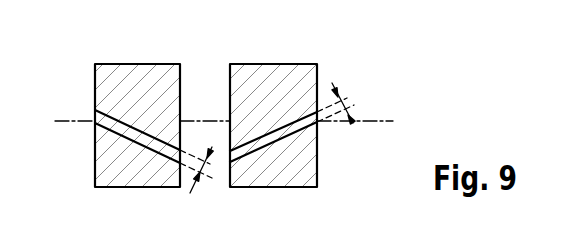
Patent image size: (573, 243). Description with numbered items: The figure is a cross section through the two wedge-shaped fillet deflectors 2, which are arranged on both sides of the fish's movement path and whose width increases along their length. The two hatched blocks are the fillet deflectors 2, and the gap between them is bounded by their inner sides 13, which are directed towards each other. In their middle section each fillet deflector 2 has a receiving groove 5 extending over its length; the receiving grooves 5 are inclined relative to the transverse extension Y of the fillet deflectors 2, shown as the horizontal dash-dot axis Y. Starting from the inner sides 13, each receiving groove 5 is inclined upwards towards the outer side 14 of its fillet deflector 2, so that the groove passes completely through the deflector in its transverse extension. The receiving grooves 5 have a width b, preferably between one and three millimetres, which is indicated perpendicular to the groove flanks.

The fillet deflector 2 is at (142, 77).
The inner side 13 is at (230, 72).
The receiving groove 5 is at (95, 114).
The outer side 14 is at (95, 156).
The width b is at (203, 172).
The transverse extension Y is at (383, 121).